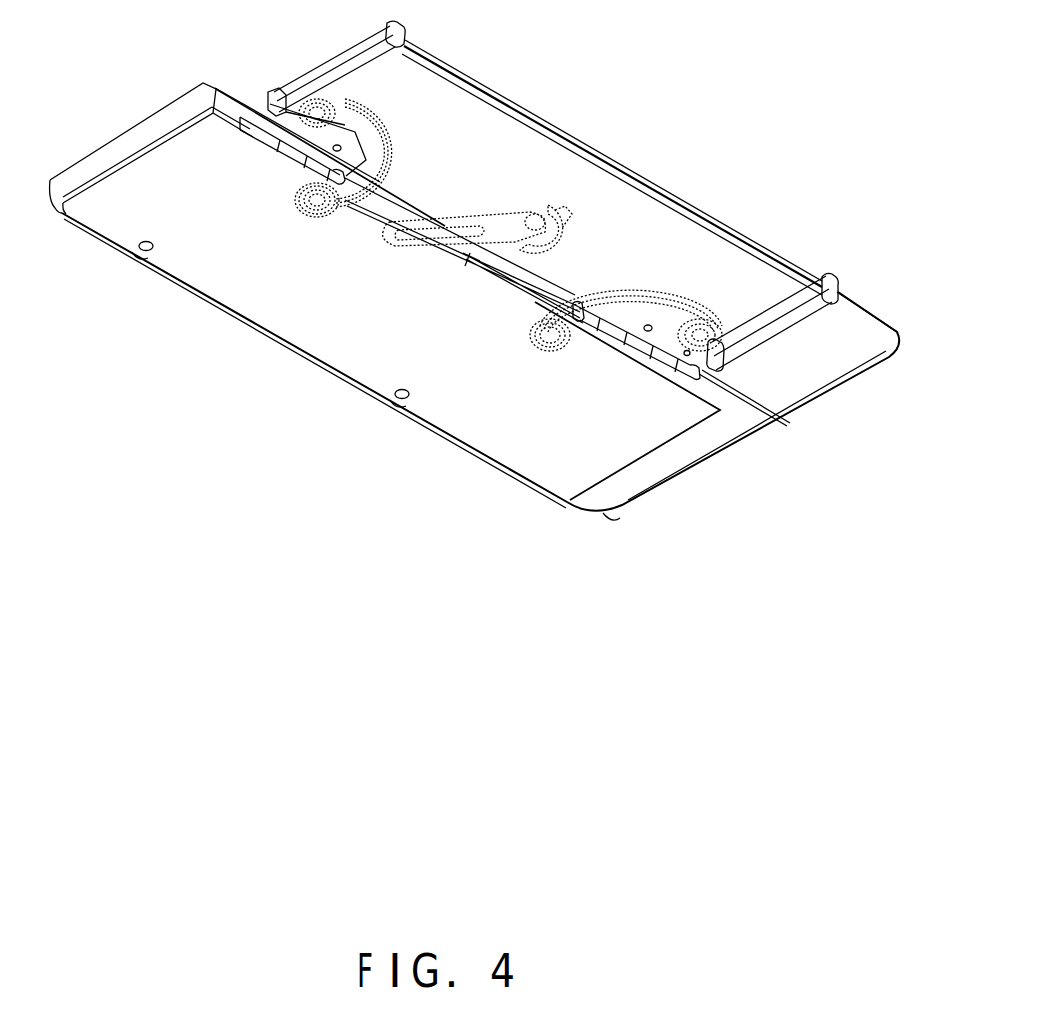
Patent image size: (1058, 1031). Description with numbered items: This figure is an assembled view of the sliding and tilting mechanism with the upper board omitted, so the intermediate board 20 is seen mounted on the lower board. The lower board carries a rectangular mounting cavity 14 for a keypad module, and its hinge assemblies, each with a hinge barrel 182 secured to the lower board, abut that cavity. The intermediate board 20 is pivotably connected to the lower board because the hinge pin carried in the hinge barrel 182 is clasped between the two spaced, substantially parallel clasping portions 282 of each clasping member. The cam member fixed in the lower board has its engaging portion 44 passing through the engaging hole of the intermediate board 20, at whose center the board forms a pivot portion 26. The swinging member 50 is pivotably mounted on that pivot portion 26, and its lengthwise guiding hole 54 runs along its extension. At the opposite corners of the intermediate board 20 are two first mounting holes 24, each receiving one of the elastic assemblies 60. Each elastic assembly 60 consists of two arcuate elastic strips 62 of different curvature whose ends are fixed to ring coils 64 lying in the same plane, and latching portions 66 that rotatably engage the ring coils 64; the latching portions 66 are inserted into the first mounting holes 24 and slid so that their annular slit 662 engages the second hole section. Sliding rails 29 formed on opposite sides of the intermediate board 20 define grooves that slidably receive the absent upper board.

The mounting cavity 14 is at (357, 355).
The intermediate board 20 is at (748, 268).
The first mounting holes 24 is at (350, 108).
The pivot portion 26 is at (532, 212).
The sliding rails 29 is at (840, 285).
The engaging portion 44 is at (572, 205).
The swinging member 50 is at (497, 222).
The guiding hole 54 is at (423, 228).
The elastic assemblies 60 is at (218, 299).
The elastic strips 62 is at (318, 217).
The ring coils 64 is at (313, 212).
The latching portions 66 is at (307, 203).
The hinge barrel 182 is at (640, 357).
The clasping portions 282 is at (673, 367).
The annular slit 662 is at (540, 347).